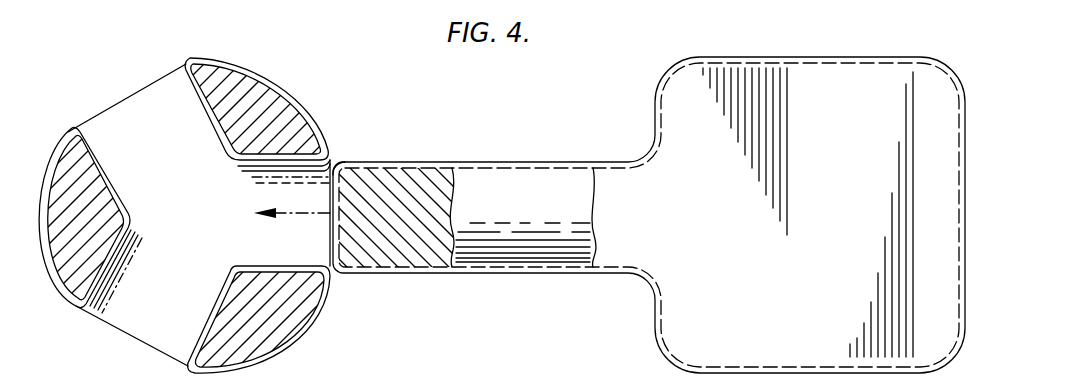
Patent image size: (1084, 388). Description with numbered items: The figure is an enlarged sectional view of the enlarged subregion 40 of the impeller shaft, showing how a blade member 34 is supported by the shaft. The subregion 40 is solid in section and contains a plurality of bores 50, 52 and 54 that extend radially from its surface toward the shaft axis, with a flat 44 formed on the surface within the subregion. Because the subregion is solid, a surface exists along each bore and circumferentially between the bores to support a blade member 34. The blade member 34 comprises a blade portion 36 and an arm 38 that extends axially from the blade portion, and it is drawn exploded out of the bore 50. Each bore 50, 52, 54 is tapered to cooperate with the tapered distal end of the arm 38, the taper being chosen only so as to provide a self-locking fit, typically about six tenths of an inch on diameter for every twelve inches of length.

The blade member 34 is at (606, 222).
The blade portion 36 is at (680, 358).
The arm 38 is at (447, 162).
The subregion 40 is at (267, 97).
The flat 44 is at (151, 86).
The bore 50 is at (334, 162).
The bore 52 is at (198, 317).
The bore 54 is at (97, 143).